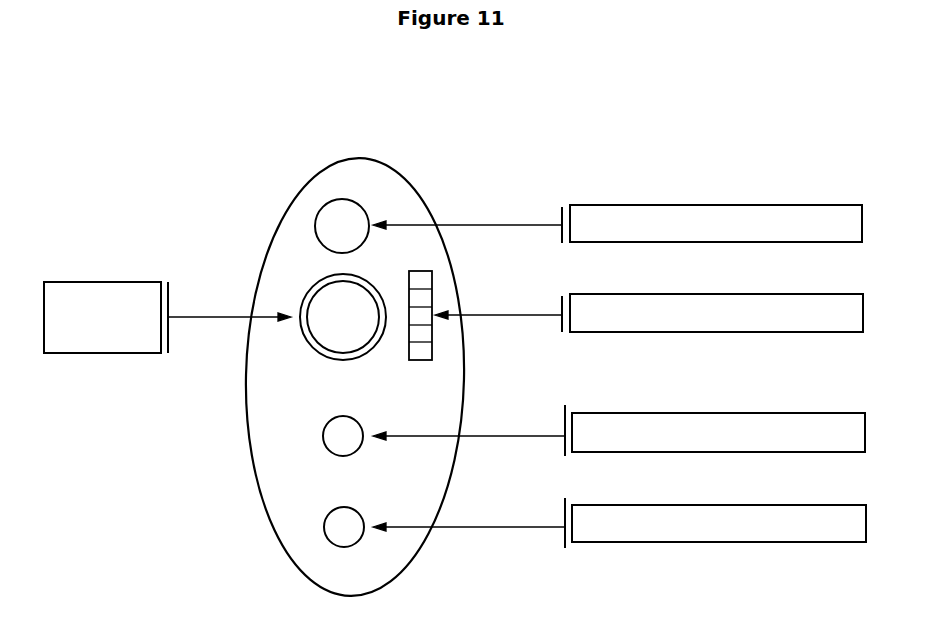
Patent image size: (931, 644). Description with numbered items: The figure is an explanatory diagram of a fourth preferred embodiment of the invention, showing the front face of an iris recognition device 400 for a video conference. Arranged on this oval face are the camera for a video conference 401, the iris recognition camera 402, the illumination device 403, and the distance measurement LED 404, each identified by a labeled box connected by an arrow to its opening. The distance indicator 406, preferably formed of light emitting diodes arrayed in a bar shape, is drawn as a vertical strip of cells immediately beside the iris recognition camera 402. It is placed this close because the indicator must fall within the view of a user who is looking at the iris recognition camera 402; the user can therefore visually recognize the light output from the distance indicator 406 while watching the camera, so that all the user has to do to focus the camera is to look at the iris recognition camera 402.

The iris recognition terminal front panel 400 is at (357, 158).
The camera for a video conference 401 is at (723, 205).
The iris recognition camera 402 is at (118, 282).
The illumination device 403 is at (723, 413).
The distance measurement LED 404 is at (723, 505).
The distance indicator 406 is at (723, 294).